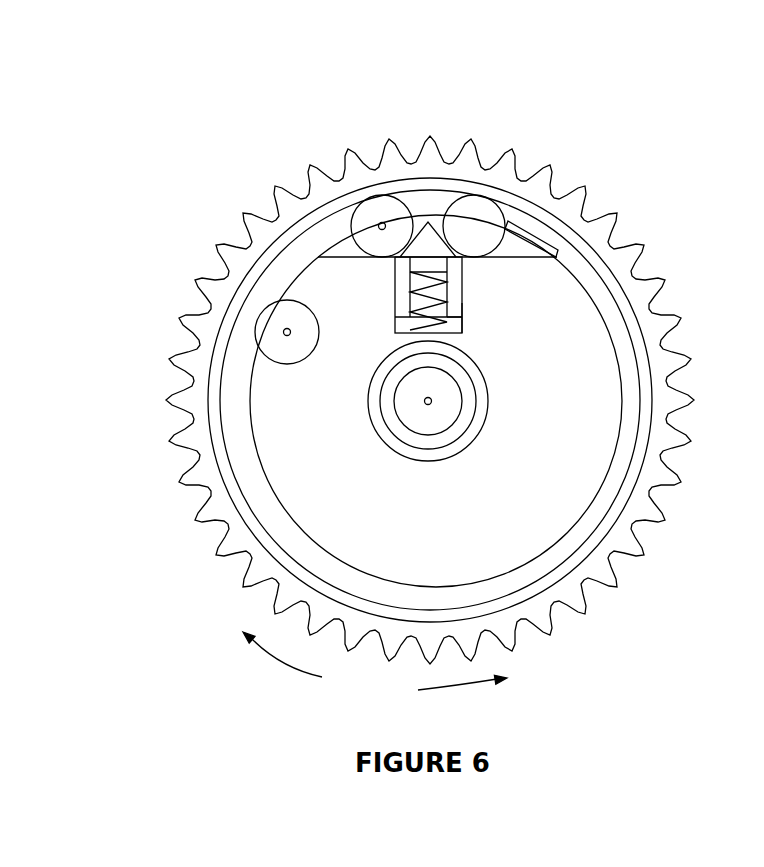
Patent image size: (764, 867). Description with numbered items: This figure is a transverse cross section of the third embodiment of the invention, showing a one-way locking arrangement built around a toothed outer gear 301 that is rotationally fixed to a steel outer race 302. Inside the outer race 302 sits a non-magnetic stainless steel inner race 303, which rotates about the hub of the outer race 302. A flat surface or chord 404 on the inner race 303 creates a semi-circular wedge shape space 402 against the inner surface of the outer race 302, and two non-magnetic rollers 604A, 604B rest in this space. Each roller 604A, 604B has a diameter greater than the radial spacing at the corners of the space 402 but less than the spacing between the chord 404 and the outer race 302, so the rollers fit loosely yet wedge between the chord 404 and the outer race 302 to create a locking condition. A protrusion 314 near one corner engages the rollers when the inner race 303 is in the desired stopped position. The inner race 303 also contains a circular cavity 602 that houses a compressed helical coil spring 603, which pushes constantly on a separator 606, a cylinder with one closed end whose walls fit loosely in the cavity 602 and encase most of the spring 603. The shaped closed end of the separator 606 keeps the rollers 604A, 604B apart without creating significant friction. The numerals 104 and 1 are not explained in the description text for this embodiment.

The outer gear 301 is at (617, 224).
The outer race 302 is at (617, 259).
The inner race 303 is at (603, 360).
The wedge shape space 402 is at (428, 198).
The chord 404 is at (510, 263).
The roller 604A is at (382, 190).
The roller 604B is at (500, 190).
The protrusion 314 is at (534, 219).
The circular cavity 602 is at (390, 307).
The separator 606 is at (382, 292).
The coil spring 603 is at (462, 303).
The follower roller 104 is at (240, 334).
The partial numeral 1 is at (759, 283).